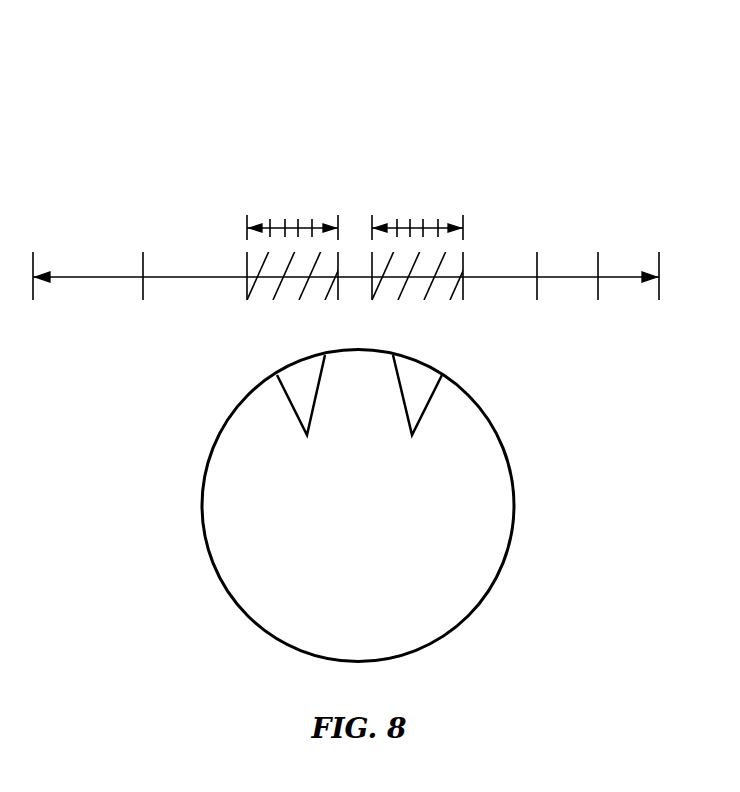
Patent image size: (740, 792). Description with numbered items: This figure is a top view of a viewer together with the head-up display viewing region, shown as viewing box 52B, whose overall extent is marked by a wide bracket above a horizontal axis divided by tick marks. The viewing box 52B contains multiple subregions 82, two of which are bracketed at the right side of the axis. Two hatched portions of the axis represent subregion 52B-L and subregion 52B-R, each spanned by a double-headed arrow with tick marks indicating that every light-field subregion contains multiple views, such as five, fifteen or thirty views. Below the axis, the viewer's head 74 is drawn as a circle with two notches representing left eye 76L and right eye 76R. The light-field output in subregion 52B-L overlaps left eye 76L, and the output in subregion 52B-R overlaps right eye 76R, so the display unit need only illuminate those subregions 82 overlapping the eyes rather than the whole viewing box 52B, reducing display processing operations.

The viewing box 52B is at (33, 78).
The left subregion 52B-L is at (338, 202).
The right subregion 52B-R is at (463, 202).
The subregions 82 is at (598, 243).
The head 74 is at (514, 507).
The left eye 76L is at (287, 378).
The right eye 76R is at (428, 378).